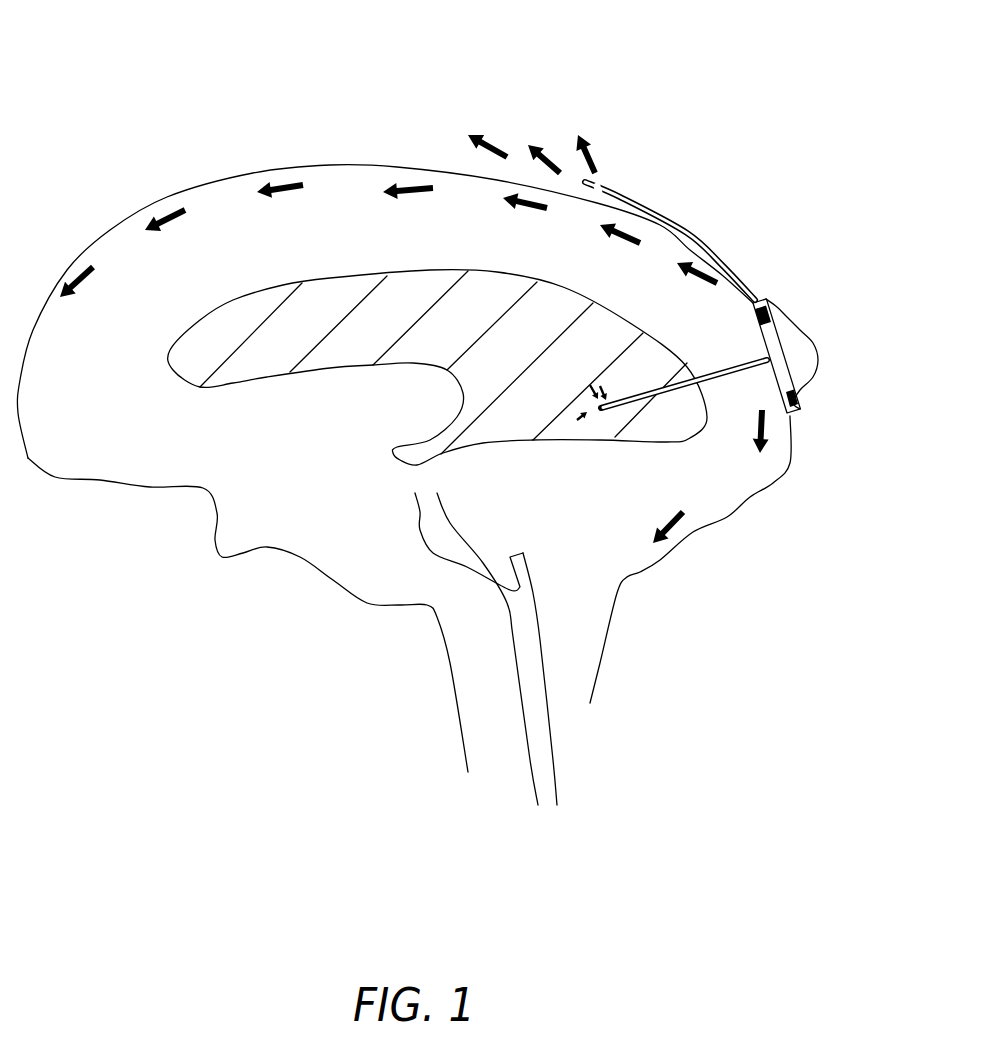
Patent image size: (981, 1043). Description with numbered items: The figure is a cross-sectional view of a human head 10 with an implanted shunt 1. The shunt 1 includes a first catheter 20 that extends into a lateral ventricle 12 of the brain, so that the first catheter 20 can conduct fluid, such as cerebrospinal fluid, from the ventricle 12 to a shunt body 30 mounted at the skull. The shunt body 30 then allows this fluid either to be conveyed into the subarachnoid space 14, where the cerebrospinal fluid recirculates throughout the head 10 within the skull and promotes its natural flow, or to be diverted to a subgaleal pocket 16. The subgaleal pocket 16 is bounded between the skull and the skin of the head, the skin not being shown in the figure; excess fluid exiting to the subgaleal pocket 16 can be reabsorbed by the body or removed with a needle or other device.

The shunt 1 is at (680, 297).
The human head 10 is at (132, 116).
The lateral ventricle 12 is at (260, 360).
The subarachnoid space 14 is at (350, 180).
The subgaleal pocket 16 is at (518, 125).
The first catheter 20 is at (723, 377).
The shunt body 30 is at (818, 358).